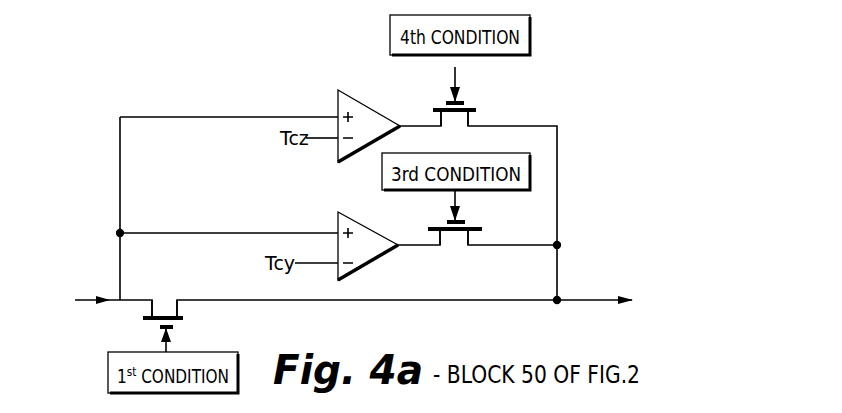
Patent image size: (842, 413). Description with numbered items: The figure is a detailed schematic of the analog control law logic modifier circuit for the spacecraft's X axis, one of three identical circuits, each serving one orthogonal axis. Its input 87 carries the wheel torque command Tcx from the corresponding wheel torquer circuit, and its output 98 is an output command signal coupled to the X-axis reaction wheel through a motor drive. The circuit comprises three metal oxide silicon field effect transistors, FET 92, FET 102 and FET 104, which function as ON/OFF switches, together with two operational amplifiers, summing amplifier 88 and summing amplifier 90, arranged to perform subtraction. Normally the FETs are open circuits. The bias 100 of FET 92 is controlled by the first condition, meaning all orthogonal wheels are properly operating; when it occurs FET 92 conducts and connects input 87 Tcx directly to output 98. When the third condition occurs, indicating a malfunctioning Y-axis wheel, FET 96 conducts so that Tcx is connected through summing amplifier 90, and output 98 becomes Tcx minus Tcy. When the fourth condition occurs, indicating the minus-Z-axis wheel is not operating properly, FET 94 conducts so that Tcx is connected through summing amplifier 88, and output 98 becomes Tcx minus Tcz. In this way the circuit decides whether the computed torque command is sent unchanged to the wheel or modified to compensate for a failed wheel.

The input 87 is at (87, 298).
The summing amplifier 88 is at (355, 95).
The summing amplifier 90 is at (365, 230).
The FET 92 is at (166, 298).
The FET 94 is at (448, 123).
The FET 96 is at (456, 245).
The output 98 is at (591, 301).
The bias 100 is at (162, 345).
The FET 102 is at (458, 198).
The FET 104 is at (454, 73).